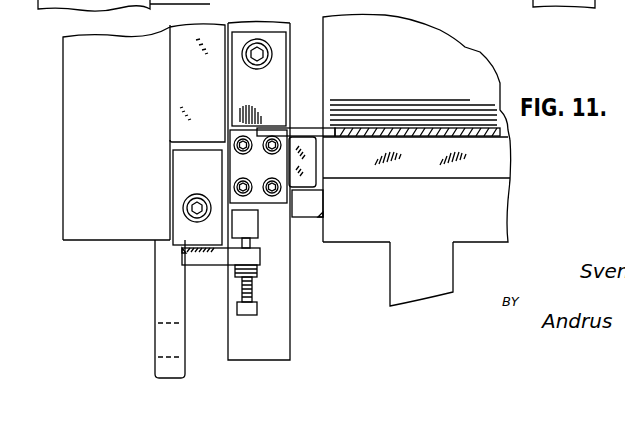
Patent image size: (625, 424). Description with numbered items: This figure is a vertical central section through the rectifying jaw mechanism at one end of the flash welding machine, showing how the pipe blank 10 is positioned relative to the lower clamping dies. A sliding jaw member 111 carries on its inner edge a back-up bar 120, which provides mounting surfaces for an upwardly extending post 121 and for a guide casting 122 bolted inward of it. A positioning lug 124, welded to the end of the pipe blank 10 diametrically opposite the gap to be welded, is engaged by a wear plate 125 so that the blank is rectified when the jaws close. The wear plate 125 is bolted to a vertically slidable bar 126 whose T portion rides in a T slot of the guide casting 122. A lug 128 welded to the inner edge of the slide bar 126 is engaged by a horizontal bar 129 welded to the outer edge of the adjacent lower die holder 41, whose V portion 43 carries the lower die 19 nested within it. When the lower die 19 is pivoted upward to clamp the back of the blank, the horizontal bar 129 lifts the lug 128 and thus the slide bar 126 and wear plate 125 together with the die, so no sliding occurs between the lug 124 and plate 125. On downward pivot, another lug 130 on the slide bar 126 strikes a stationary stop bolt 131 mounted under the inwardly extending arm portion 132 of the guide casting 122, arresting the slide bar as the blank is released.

The tubular pipe blank 10 is at (474, 63).
The lower die 19 is at (497, 165).
The lower die holder 41 is at (500, 210).
The V portion 43 is at (377, 244).
The left sliding jaw member 111 is at (152, 255).
The back-up bar 120 is at (75, 175).
The post 121 is at (185, 75).
The guide casting 122 is at (280, 266).
The positioning lug 124 is at (305, 125).
The wear plate 125 is at (238, 163).
The slide bar 126 is at (275, 83).
The lug 128 is at (309, 152).
The horizontal bar 129 is at (308, 206).
The lug 130 is at (258, 220).
The stop bolt 131 is at (249, 281).
The arm portion 132 is at (173, 183).